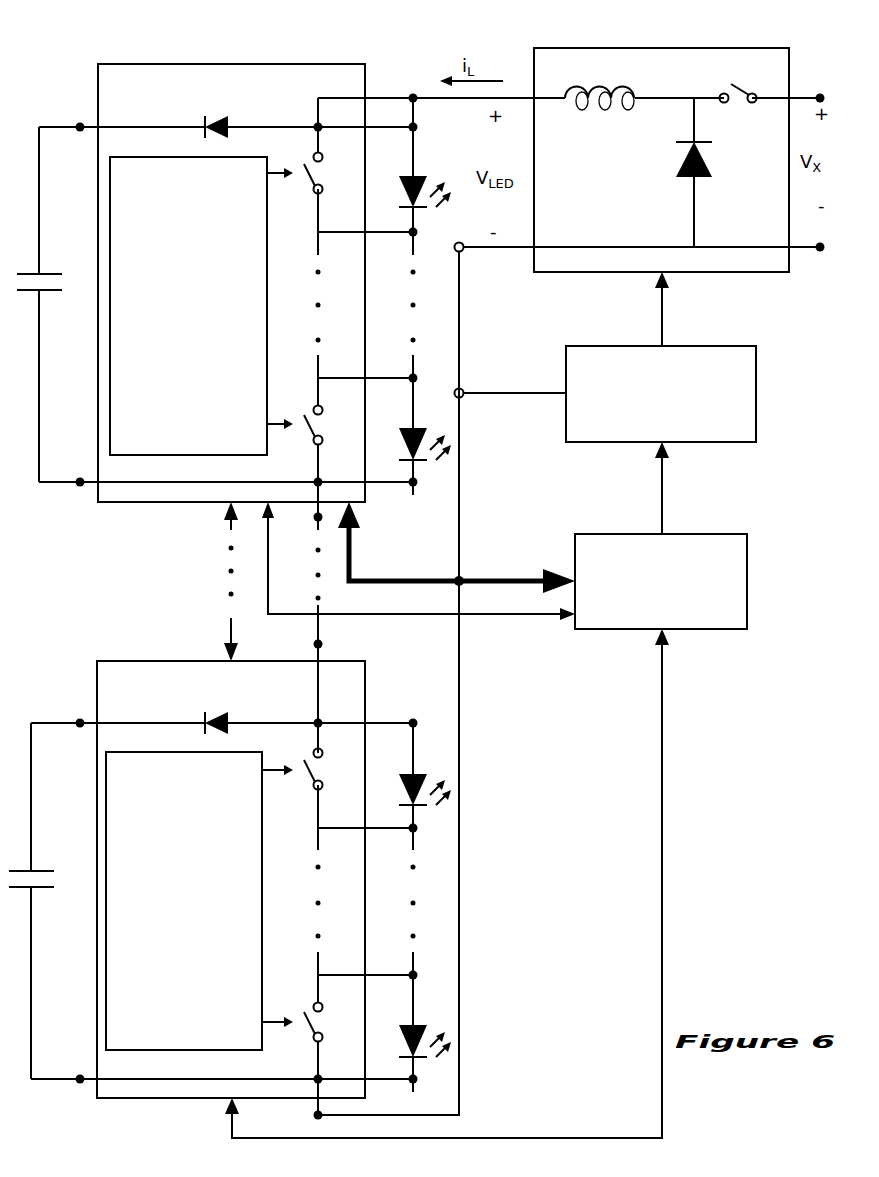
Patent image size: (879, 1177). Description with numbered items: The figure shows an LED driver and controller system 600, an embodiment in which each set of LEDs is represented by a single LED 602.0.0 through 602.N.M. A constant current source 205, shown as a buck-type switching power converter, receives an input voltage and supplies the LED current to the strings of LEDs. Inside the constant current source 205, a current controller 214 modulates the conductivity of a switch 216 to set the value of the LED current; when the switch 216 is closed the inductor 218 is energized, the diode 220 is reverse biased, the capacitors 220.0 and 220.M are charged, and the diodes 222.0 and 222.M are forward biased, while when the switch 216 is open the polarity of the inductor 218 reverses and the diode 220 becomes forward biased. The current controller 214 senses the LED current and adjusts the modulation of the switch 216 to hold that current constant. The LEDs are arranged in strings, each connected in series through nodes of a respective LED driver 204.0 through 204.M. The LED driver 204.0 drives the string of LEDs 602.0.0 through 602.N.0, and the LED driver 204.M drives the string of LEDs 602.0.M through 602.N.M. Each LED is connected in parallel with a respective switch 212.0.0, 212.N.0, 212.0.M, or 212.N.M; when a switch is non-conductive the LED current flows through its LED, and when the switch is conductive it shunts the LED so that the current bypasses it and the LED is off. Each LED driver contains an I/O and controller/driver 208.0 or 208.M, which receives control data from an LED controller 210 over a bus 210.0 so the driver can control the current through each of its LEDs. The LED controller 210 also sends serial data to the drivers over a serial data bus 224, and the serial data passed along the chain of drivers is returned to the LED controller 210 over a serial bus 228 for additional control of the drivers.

The LED driver and controller system 600 is at (744, 723).
The constant current source 205 is at (581, 48).
The switch 216 is at (716, 82).
The inductor 218 is at (580, 107).
The diode 220 is at (683, 180).
The current controller 214 is at (661, 357).
The LED controller 210 is at (661, 535).
The bus 210.0 is at (373, 580).
The serial data bus 224 is at (477, 614).
The serial bus 228 is at (662, 862).
The LED driver 204.0 is at (130, 64).
The LED driver 204.M is at (130, 661).
The I/O and controller/driver 208.0 is at (188, 306).
The I/O and controller/driver 208.M is at (184, 901).
The diode 222.0 is at (205, 117).
The diode 222.M is at (216, 723).
The capacitor 220.0 is at (41, 272).
The capacitor 220.M is at (76, 843).
The switch 212.0.0 is at (292, 193).
The switch 212.N.0 is at (296, 404).
The switch 212.0.M is at (291, 793).
The switch 212.N.M is at (297, 1003).
The LED 602.0.0 is at (470, 143).
The LED 602.N.0 is at (416, 466).
The LED 602.0.M is at (427, 776).
The LED 602.N.M is at (433, 1053).